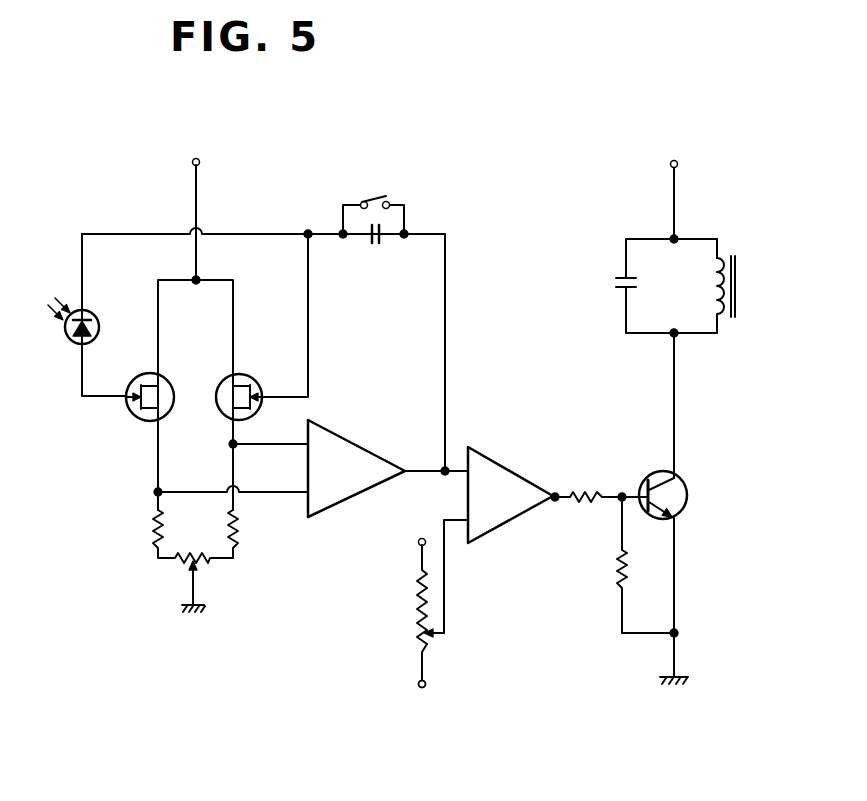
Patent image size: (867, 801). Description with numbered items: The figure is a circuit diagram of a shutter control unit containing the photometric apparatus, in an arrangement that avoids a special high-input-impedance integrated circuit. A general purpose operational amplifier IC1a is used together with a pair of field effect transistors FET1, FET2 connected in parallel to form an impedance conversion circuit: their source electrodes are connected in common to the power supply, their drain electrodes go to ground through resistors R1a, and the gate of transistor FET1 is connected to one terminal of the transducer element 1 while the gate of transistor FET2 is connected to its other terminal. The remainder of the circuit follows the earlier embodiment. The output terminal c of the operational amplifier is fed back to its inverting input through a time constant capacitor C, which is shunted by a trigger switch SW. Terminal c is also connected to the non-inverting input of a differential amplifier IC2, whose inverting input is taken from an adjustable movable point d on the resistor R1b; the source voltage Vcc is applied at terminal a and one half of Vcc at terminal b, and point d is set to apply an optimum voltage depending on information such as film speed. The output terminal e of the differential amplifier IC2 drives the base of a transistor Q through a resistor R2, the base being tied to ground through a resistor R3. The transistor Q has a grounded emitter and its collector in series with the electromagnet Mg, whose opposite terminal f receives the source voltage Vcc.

The terminal a is at (200, 162).
The terminal b is at (418, 686).
The output terminal c is at (446, 466).
The movable point d is at (437, 642).
The output terminal e is at (556, 492).
The terminal f is at (671, 166).
The trigger switch SW is at (376, 197).
The time constant capacitor C is at (375, 246).
The transducer element 1 is at (90, 340).
The field effect transistor FET1 is at (132, 414).
The field effect transistor FET2 is at (258, 366).
The resistors R1a is at (222, 527).
The resistor R1b is at (418, 591).
The general purpose operational amplifier IC1a is at (335, 498).
The differential amplifier IC2 is at (491, 522).
The resistor R2 is at (573, 497).
The resistor R3 is at (615, 568).
The transistor Q is at (688, 493).
The electromagnet Mg is at (714, 292).